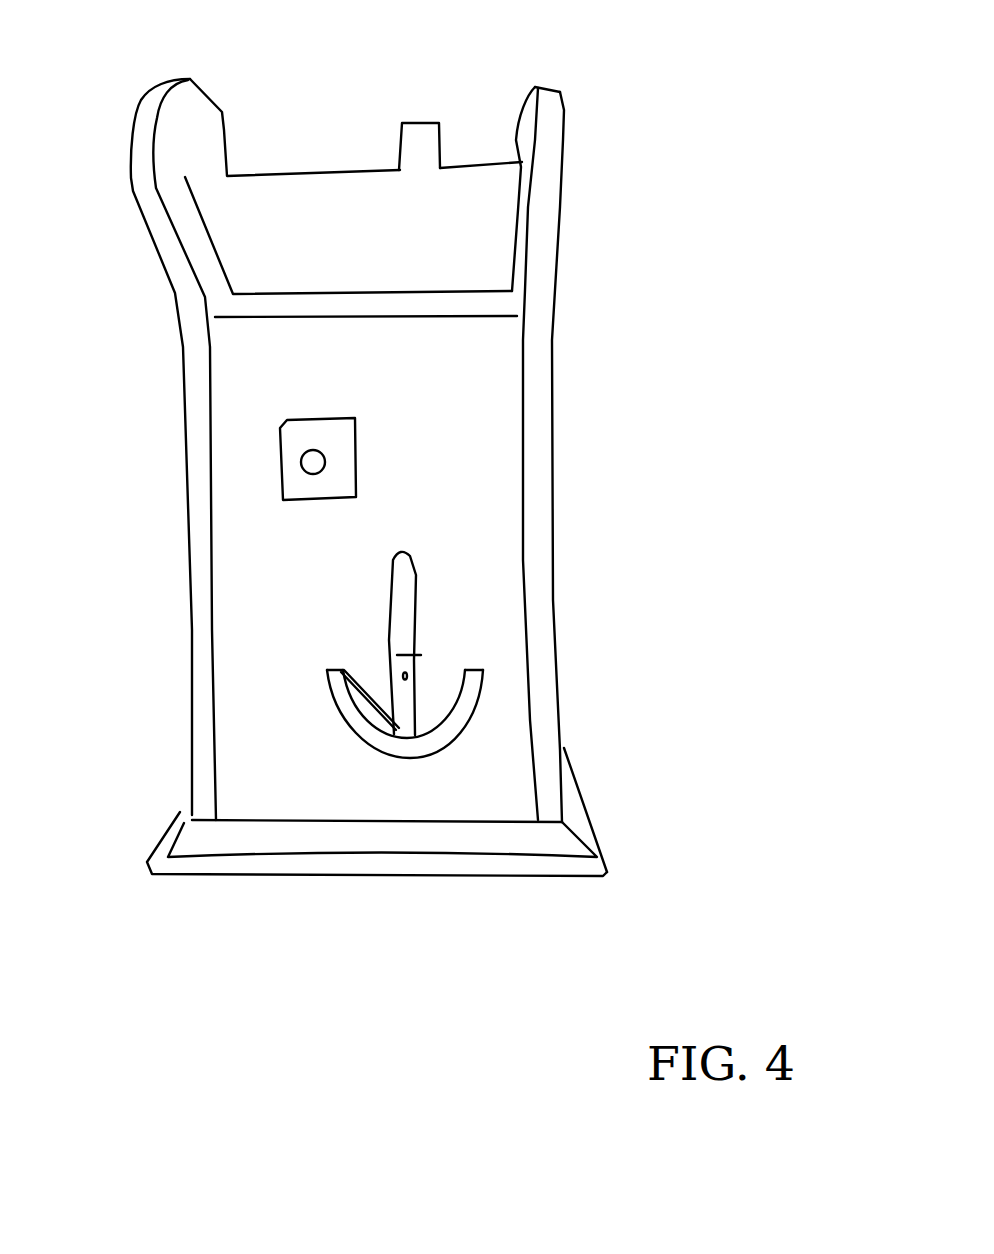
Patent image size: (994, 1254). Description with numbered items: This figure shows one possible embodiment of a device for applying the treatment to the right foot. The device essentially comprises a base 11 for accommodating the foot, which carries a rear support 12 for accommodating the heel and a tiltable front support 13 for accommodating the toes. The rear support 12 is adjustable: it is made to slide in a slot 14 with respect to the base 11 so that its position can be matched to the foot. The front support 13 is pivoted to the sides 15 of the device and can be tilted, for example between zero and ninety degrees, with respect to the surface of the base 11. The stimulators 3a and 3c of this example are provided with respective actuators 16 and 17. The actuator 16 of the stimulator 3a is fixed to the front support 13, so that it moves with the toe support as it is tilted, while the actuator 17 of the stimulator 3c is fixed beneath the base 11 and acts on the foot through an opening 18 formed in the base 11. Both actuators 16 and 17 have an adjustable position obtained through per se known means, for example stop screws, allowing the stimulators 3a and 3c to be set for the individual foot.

The stimulator 3a is at (478, 91).
The stimulator 3c is at (250, 526).
The base 11 is at (480, 453).
The rear support 12 is at (417, 741).
The front support 13 is at (500, 212).
The slot 14 is at (410, 600).
The sides 15 is at (142, 184).
The actuator 16 is at (400, 152).
The actuator 17 is at (327, 458).
The opening 18 is at (290, 433).